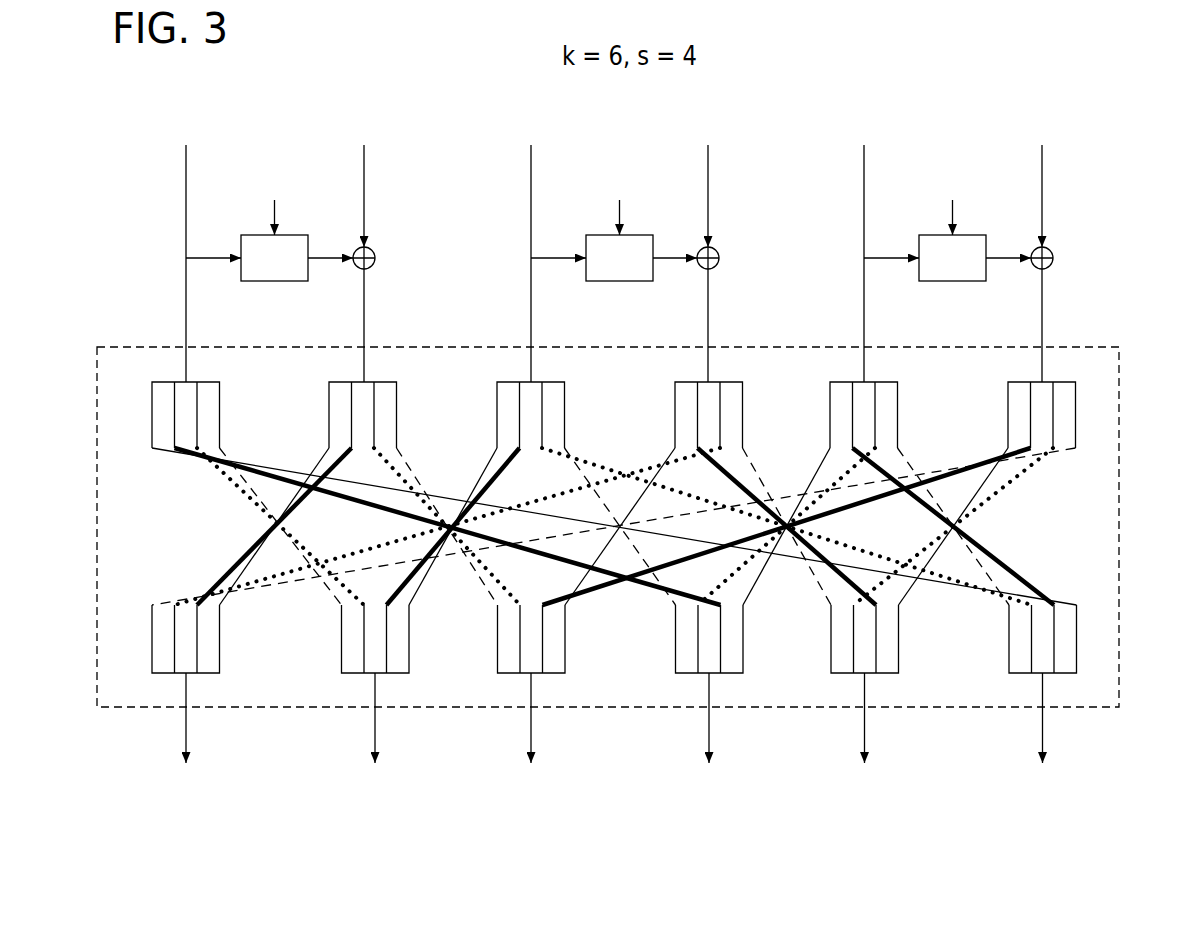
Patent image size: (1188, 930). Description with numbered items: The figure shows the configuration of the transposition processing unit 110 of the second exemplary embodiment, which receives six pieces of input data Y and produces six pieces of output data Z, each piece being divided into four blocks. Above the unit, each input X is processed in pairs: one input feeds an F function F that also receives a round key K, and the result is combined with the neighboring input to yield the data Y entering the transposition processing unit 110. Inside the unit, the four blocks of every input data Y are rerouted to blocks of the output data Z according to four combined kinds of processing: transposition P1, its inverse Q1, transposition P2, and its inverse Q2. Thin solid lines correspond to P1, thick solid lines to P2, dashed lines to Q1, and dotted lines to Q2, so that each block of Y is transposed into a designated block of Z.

The transposition processing unit 110 is at (940, 708).
The input data blocks X0-X5 X is at (618, 179).
The input data Y is at (617, 320).
The output data Z is at (619, 718).
The round keys K_i,0-K_i,2 K is at (622, 200).
The F-function processing unit F is at (619, 258).